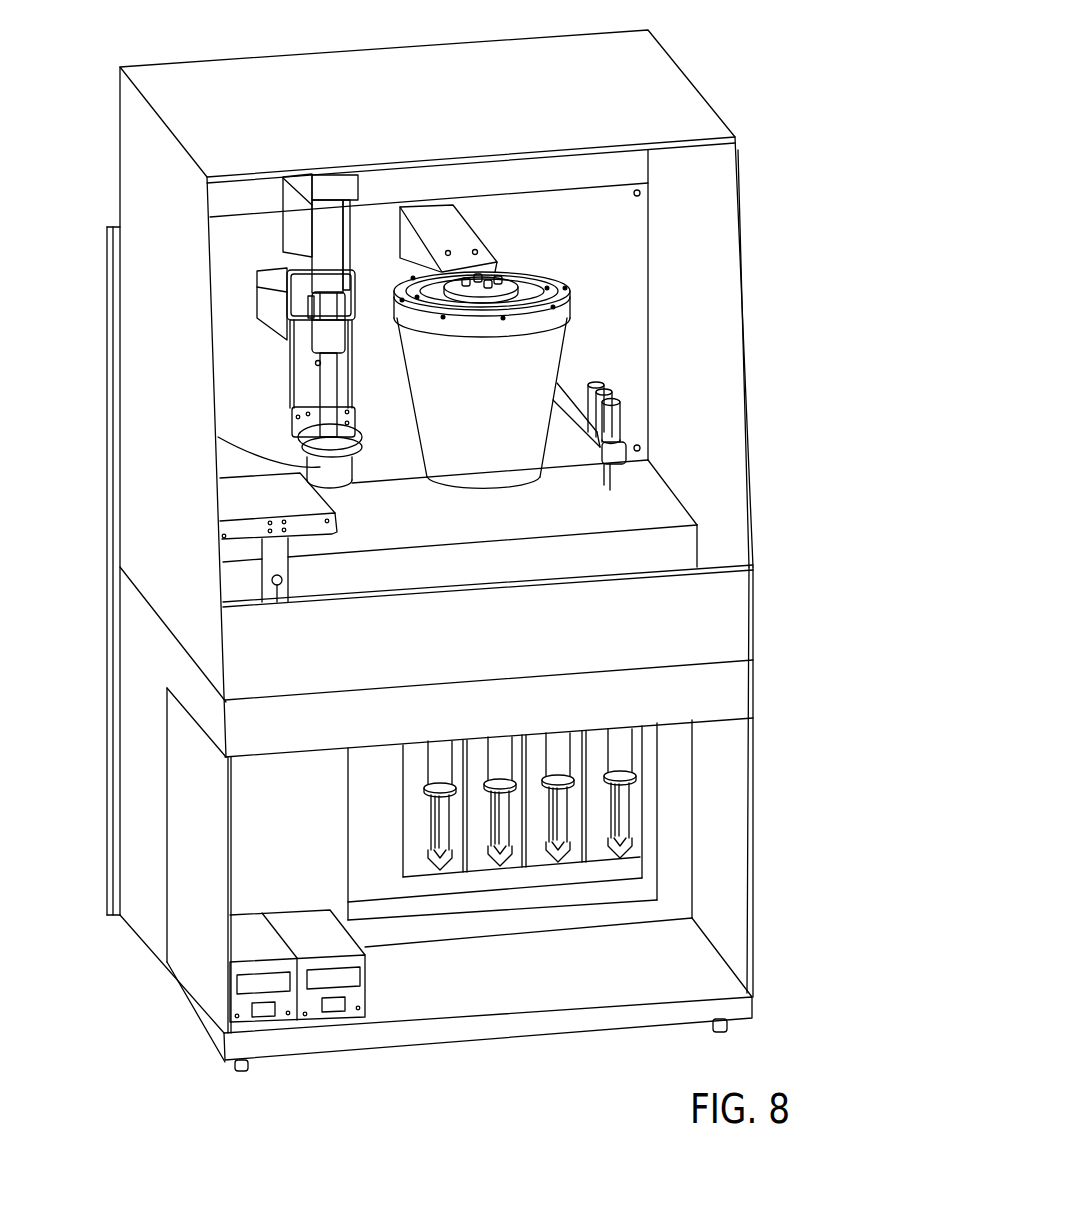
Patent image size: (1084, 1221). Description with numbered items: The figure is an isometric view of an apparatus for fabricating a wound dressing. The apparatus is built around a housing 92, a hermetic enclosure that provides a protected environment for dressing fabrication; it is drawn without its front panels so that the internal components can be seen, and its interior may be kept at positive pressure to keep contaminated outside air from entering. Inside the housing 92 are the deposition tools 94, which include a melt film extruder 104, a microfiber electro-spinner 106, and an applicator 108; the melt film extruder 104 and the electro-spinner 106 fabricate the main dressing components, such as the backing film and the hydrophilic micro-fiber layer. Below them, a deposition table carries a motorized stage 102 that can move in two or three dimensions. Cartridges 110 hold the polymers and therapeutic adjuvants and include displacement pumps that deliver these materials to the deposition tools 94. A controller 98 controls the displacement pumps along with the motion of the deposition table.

The housing 92 is at (673, 53).
The deposition tools 94 is at (82, 193).
The controller 98 is at (240, 1007).
The motorized stage 102 is at (273, 558).
The melt film extruder 104 is at (325, 245).
The electro-spinner 106 is at (513, 357).
The applicator 108 is at (613, 418).
The cartridges 110 is at (620, 817).